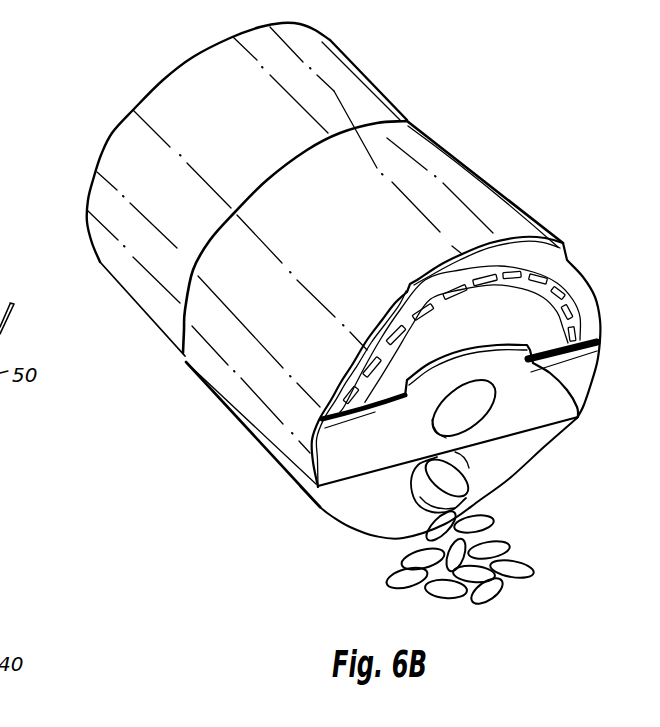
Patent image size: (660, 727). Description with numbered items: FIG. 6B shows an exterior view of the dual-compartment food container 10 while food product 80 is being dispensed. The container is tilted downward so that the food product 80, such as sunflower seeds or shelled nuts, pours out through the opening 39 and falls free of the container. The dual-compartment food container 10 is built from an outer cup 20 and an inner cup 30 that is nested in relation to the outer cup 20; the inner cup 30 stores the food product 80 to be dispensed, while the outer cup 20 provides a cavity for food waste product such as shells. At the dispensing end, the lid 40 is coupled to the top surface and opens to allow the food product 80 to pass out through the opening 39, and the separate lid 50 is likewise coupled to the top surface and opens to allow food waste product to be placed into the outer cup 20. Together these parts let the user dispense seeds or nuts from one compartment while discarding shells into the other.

The dual-compartment food container 10 is at (79, 102).
The outer cup 20 is at (478, 164).
The inner cup 30 is at (362, 71).
The opening 39 is at (430, 460).
The lid 40 is at (553, 410).
The lid 50 is at (581, 292).
The food product 80 is at (501, 599).